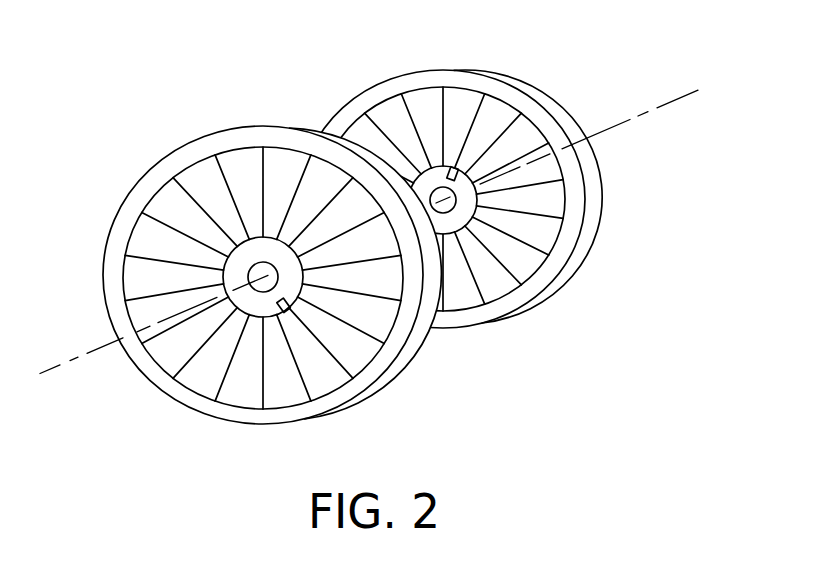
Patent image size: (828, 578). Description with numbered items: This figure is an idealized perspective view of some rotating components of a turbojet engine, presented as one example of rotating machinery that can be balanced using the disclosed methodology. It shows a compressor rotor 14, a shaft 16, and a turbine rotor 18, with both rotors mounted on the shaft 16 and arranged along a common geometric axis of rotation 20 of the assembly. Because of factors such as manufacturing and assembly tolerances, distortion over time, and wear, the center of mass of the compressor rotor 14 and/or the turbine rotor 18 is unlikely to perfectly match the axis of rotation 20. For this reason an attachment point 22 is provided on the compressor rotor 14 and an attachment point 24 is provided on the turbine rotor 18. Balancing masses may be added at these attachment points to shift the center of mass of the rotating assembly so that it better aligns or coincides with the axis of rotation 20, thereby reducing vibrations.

The compressor rotor 14 is at (272, 305).
The shaft 16 is at (517, 283).
The turbine rotor 18 is at (481, 182).
The axis of rotation 20 is at (58, 364).
The attachment point 22 is at (283, 310).
The attachment point 24 is at (452, 167).